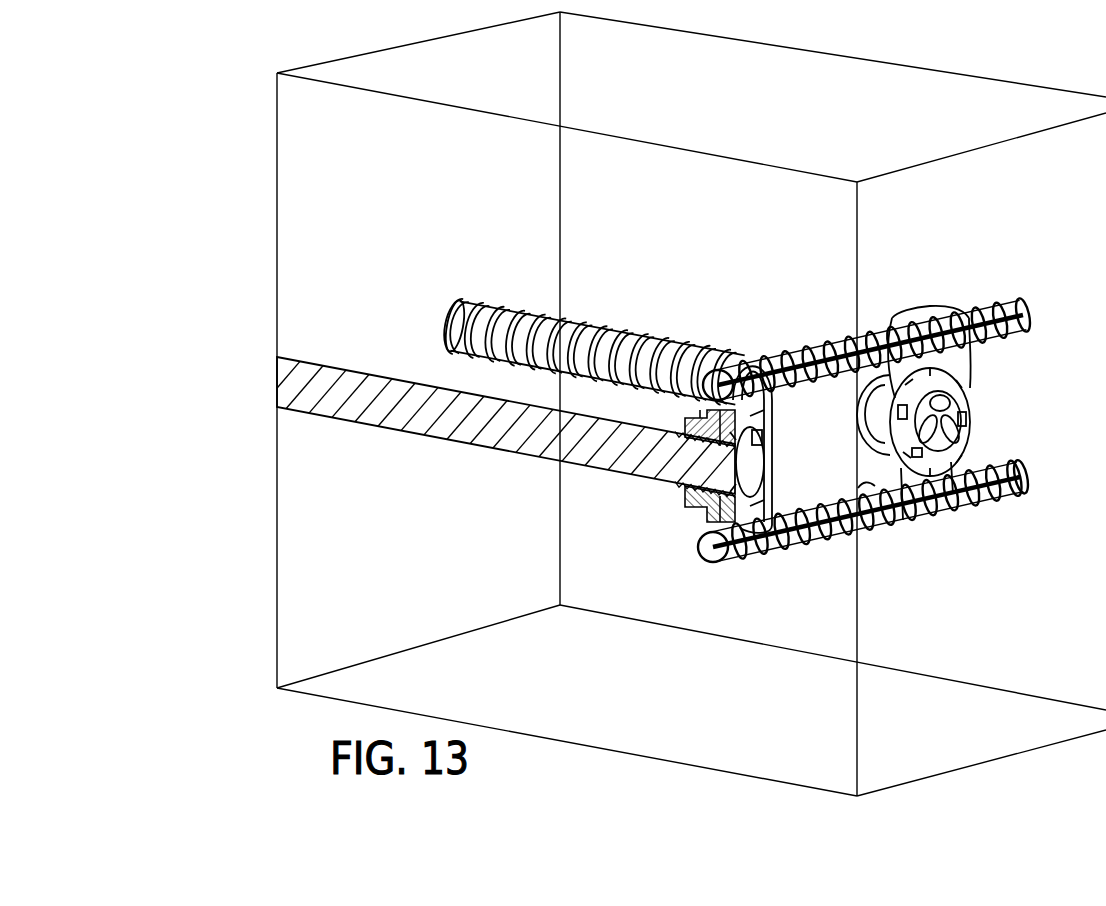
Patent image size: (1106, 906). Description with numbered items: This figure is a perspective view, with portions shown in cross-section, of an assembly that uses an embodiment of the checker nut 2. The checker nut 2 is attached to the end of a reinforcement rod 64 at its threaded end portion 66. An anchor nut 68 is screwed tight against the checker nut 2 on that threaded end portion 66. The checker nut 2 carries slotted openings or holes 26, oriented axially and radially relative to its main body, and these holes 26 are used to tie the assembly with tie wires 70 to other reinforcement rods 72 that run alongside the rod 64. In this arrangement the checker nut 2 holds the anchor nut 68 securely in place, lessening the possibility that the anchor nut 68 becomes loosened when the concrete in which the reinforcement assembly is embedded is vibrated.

The checker nut 2 is at (895, 391).
The slotted openings 26 is at (905, 343).
The reinforcement rod 64 is at (628, 340).
The threaded end portion 66 is at (696, 505).
The anchor nut 68 is at (840, 432).
The tie wires 70 is at (975, 362).
The reinforcement rods 72 is at (838, 333).